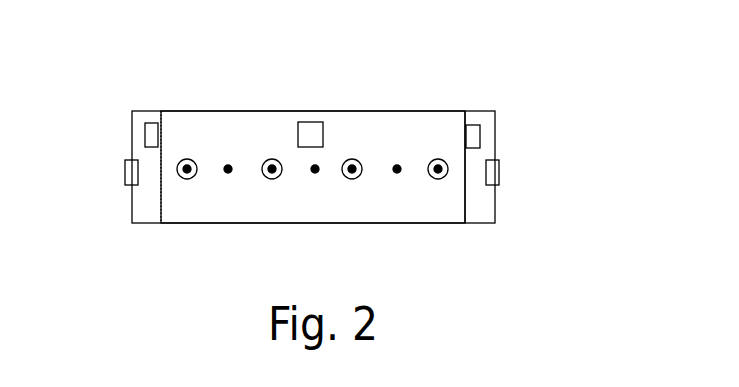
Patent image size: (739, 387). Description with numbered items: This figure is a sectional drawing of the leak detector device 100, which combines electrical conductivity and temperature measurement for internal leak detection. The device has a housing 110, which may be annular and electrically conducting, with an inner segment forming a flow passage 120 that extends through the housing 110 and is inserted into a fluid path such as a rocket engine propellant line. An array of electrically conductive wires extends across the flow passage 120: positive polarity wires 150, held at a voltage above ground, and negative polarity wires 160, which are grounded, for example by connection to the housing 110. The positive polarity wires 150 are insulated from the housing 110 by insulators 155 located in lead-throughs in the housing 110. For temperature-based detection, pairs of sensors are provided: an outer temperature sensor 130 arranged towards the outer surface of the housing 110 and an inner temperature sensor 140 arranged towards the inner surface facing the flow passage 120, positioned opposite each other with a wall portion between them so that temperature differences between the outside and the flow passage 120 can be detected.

The leak detector device 100 is at (130, 87).
The housing 110 is at (130, 213).
The flow passage 120 is at (433, 201).
The outer temperature sensor 130 is at (127, 172).
The inner temperature sensor 140 is at (140, 147).
The positive polarity wire 150 is at (184, 159).
The insulator 155 is at (269, 179).
The negative polarity wire 160 is at (228, 163).